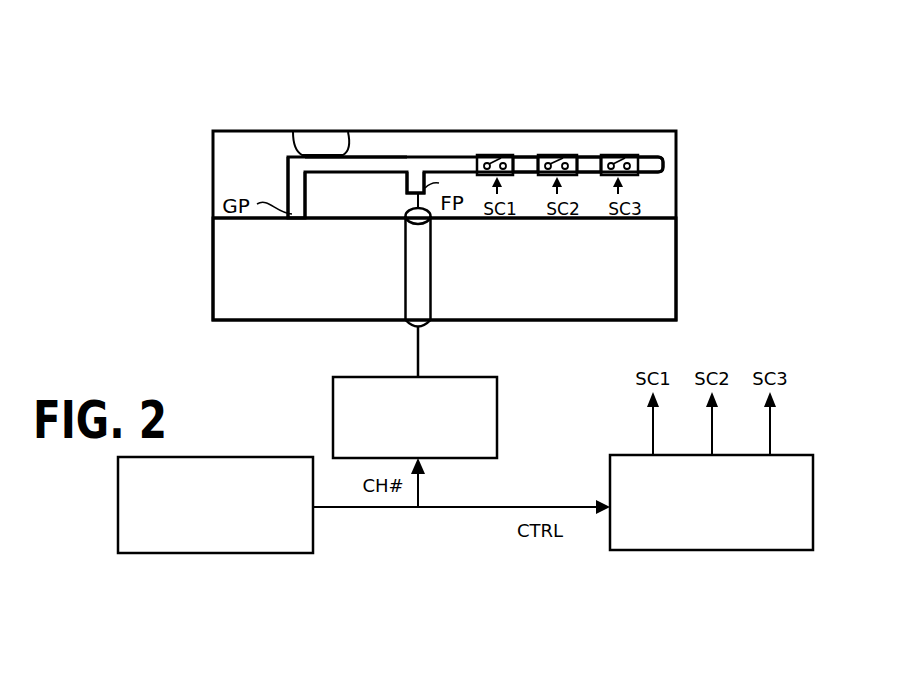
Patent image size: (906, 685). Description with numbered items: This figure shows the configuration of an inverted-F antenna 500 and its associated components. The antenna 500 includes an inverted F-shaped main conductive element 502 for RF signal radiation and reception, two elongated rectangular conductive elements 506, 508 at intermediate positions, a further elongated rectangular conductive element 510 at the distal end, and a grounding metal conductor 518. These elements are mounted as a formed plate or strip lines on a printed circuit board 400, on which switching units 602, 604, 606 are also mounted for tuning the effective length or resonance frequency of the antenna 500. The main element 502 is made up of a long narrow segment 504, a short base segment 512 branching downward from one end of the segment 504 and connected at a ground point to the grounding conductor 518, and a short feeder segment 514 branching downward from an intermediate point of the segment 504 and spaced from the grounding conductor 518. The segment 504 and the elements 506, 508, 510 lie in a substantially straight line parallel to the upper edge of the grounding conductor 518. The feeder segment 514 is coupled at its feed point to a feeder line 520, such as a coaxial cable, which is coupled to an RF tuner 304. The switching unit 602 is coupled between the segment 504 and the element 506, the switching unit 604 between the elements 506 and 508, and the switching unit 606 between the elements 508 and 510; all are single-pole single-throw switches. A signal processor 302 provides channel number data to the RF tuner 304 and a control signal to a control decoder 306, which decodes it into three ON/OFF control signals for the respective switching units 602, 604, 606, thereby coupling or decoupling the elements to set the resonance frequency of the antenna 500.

The printed circuit board 400 is at (677, 172).
The inverted-F antenna 500 is at (428, 145).
The inverted F-shaped main conductive element 502 is at (295, 132).
The long narrow segment 504 is at (345, 132).
The elongated rectangular conductive element 506 is at (528, 153).
The elongated rectangular conductive element 508 is at (592, 153).
The elongated rectangular conductive element 510 is at (660, 153).
The short base segment 512 is at (292, 190).
The short feeder segment 514 is at (407, 180).
The grounding metal conductor 518 is at (677, 240).
The feeder line 520 is at (430, 327).
The switching unit 602 is at (480, 154).
The switching unit 604 is at (562, 154).
The switching unit 606 is at (622, 154).
The signal processor 302 is at (196, 529).
The RF tuner 304 is at (400, 442).
The control decoder 306 is at (791, 531).